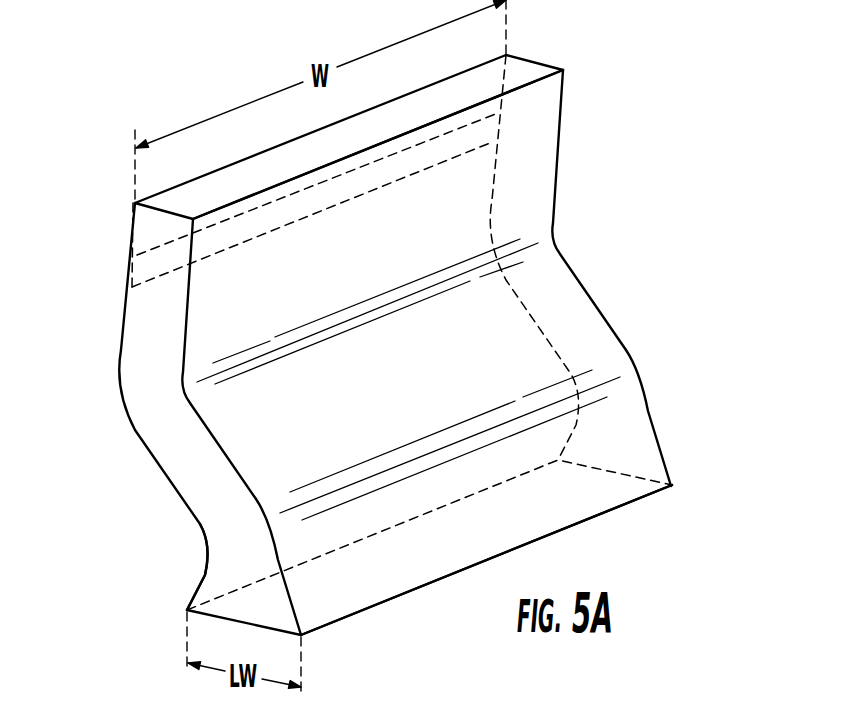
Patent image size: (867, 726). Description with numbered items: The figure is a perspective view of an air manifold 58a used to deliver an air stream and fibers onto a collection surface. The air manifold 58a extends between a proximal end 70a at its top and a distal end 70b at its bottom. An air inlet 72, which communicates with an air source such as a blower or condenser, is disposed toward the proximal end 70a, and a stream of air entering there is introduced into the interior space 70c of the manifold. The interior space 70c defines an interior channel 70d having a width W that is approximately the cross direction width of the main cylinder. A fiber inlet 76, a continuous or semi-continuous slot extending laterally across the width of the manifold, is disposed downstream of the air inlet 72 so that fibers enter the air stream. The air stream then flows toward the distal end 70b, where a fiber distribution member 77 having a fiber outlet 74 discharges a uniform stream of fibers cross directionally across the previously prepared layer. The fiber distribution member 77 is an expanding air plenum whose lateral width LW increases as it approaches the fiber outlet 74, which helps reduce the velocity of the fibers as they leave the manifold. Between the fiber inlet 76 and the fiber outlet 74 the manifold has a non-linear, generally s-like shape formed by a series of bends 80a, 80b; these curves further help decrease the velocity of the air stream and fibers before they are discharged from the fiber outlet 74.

The air manifold 58a is at (665, 267).
The proximal end 70a is at (552, 68).
The distal end 70b is at (652, 430).
The interior space 70c is at (472, 193).
The interior channel 70d is at (177, 417).
The air inlet 72 is at (430, 107).
The fiber outlet 74 is at (337, 634).
The fiber inlet 76 is at (145, 270).
The fiber distribution member 77 is at (227, 533).
The bend 80a is at (127, 373).
The bend 80b is at (262, 502).